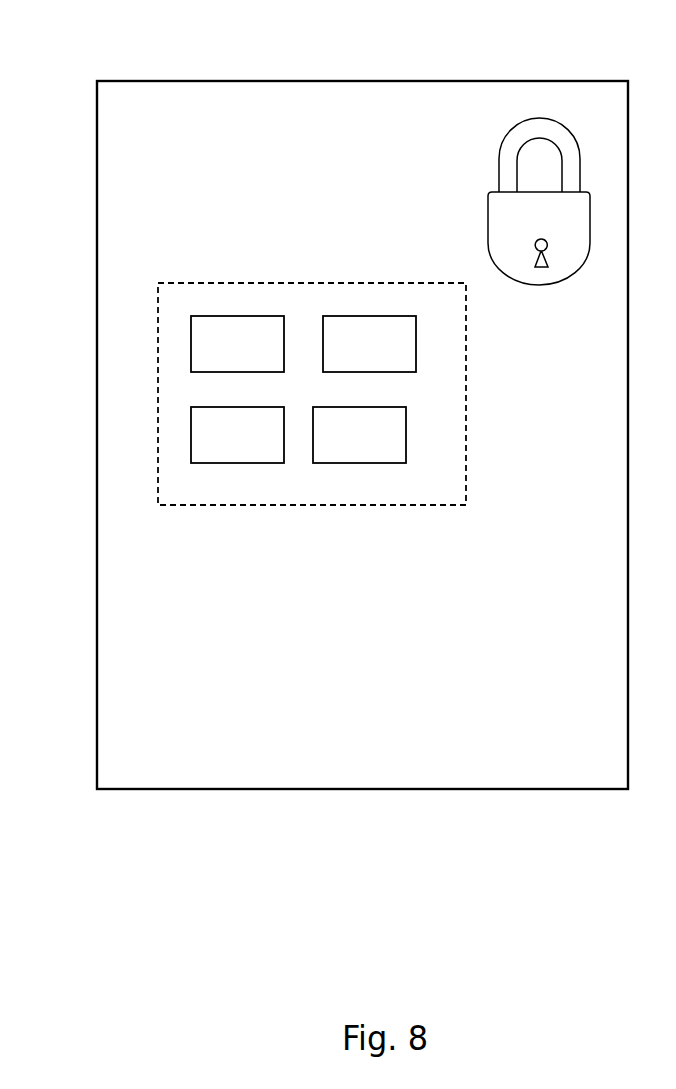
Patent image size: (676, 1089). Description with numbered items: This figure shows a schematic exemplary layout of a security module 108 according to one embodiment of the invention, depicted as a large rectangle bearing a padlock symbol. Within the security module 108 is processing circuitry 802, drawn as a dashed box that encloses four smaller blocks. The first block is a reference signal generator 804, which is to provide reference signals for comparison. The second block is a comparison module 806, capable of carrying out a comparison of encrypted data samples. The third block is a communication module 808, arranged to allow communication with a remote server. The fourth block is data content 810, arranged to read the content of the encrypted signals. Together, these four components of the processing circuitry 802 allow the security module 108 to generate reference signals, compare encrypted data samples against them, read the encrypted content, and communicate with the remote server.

The security module 108 is at (361, 81).
The processing circuitry 802 is at (156, 322).
The reference signal generator 804 is at (220, 356).
The comparison module 806 is at (351, 356).
The communication module 808 is at (220, 446).
The data content 810 is at (342, 446).